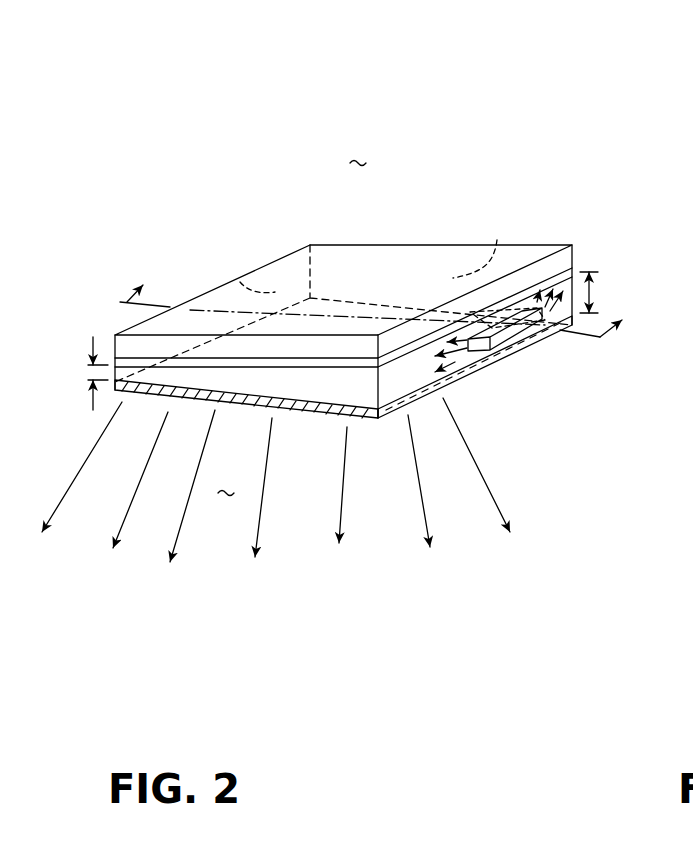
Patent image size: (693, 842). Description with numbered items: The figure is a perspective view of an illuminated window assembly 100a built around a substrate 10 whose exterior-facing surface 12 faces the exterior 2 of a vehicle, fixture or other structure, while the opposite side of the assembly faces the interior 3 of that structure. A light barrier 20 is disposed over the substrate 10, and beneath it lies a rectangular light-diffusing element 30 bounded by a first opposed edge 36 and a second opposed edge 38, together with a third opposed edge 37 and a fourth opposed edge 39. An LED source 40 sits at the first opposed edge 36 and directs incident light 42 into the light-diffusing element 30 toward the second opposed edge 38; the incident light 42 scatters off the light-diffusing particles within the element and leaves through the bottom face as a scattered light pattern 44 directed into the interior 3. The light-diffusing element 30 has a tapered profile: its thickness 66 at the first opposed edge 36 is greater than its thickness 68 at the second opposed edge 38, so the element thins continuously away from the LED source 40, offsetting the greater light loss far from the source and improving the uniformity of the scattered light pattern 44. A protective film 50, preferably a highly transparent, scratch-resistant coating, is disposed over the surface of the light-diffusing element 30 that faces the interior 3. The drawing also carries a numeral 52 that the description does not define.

The illuminated window assembly 100a is at (360, 322).
The exterior 2 is at (358, 150).
The interior 3 is at (226, 480).
The substrate 10 is at (562, 273).
The exterior-facing surface 12 is at (405, 241).
The light barrier 20 is at (115, 362).
The light-diffusing element 30 is at (574, 273).
The first opposed edge 36 is at (403, 380).
The third opposed edge 37 is at (345, 407).
The second opposed edge 38 is at (240, 282).
The fourth opposed edge 39 is at (497, 240).
The LED source 40 is at (505, 352).
The incident light 42 is at (453, 363).
The scattered light pattern 44 is at (423, 495).
The protective film 50 is at (532, 347).
The emission surface 52 is at (145, 402).
The thickness 66 is at (592, 292).
The thickness 68 is at (92, 348).